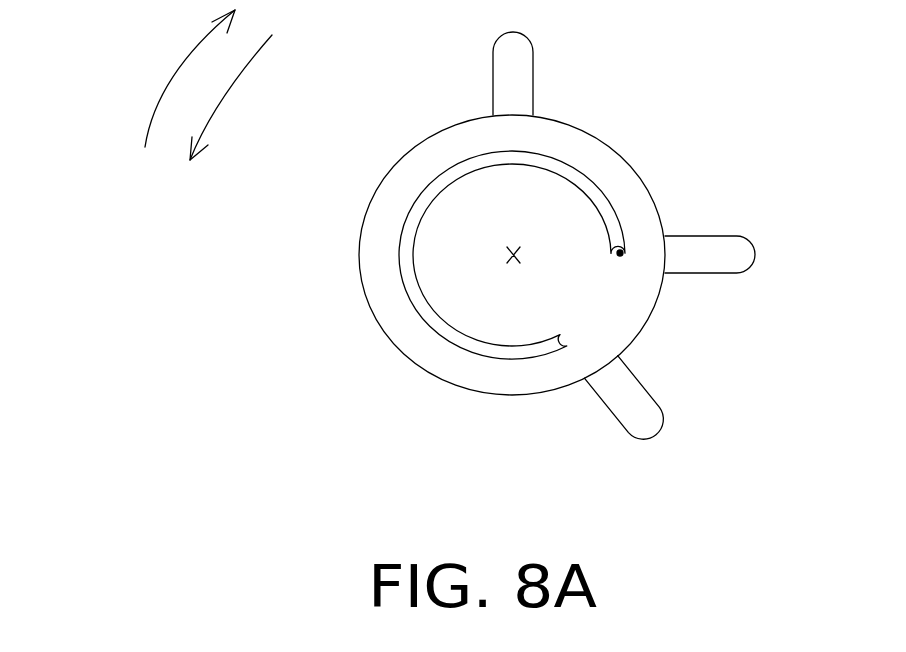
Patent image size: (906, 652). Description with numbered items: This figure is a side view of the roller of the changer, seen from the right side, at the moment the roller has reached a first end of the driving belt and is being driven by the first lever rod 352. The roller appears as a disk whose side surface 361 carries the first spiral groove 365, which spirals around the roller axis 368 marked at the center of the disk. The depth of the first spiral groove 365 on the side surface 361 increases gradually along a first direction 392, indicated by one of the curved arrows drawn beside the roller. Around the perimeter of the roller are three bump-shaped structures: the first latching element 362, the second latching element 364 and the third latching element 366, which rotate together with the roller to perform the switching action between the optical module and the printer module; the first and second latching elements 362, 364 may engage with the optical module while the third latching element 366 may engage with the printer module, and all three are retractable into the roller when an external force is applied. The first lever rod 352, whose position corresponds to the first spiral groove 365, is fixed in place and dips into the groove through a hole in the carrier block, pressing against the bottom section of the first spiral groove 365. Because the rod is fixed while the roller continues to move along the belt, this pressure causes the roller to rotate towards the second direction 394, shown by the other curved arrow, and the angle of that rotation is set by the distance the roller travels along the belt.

The first lever rod 352 is at (623, 252).
The side surface 361 is at (397, 182).
The first latching element 362 is at (743, 265).
The second latching element 364 is at (640, 423).
The first spiral groove 365 is at (400, 280).
The third latching element 366 is at (503, 60).
The roller axis 368 is at (513, 267).
The first direction 392 is at (212, 122).
The second direction 394 is at (167, 97).